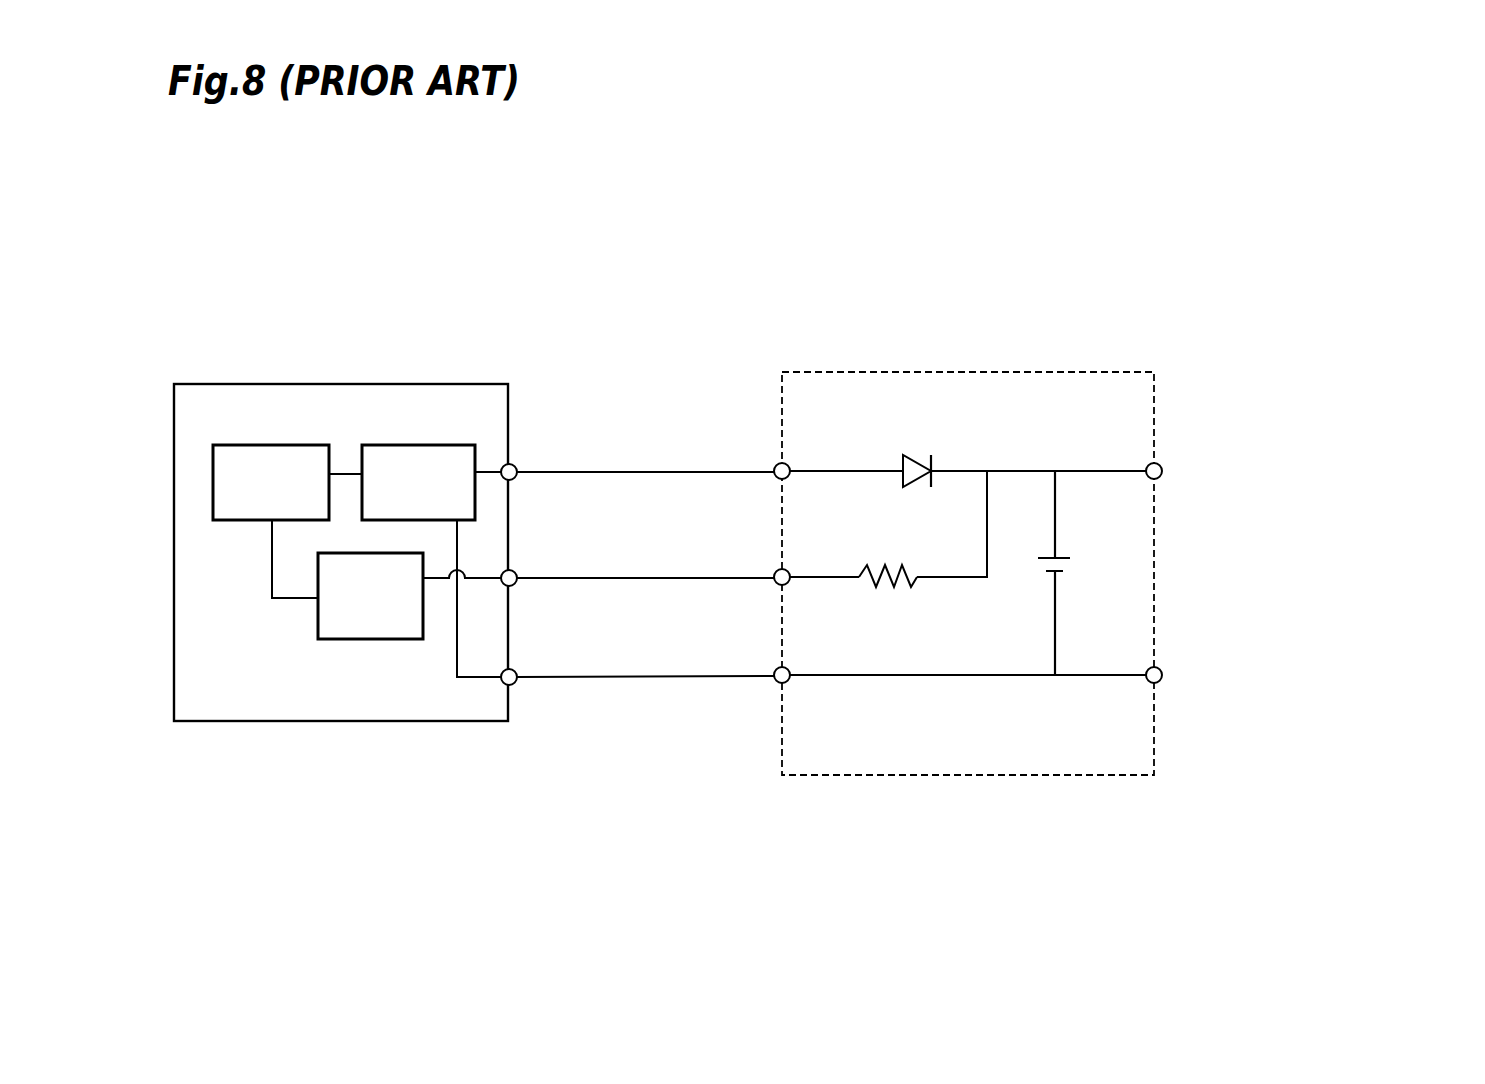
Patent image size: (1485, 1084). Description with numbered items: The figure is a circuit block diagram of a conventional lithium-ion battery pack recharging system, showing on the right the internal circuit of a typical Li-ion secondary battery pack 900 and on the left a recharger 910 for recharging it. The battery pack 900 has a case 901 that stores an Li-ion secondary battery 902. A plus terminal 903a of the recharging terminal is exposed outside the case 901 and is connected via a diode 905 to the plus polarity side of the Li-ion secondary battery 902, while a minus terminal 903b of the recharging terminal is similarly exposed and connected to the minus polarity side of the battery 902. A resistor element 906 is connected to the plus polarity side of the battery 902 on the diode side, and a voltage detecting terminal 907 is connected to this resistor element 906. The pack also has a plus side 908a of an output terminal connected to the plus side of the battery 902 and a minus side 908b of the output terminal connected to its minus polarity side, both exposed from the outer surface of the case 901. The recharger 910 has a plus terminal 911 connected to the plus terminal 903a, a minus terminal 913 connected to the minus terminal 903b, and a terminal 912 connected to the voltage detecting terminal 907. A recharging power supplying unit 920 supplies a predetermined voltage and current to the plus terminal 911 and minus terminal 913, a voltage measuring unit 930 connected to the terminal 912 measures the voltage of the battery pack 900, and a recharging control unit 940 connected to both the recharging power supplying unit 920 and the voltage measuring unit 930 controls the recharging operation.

The Li-ion secondary battery pack 900 is at (1041, 609).
The case 901 is at (1155, 718).
The Li-ion secondary battery 902 is at (1067, 557).
The plus terminal of recharging terminal 903a is at (778, 464).
The minus terminal of recharging terminal 903b is at (776, 681).
The diode 905 is at (903, 455).
The resistor element 906 is at (875, 588).
The voltage detecting terminal 907 is at (776, 572).
The plus side of output terminal 908a is at (1160, 464).
The minus side of output terminal 908b is at (1160, 668).
The recharger 910 is at (219, 721).
The plus terminal 911 is at (514, 465).
The terminal 912 is at (514, 571).
The minus terminal 913 is at (514, 670).
The recharging power supplying unit 920 is at (397, 445).
The voltage measuring unit 930 is at (383, 639).
The recharging control unit 940 is at (250, 445).